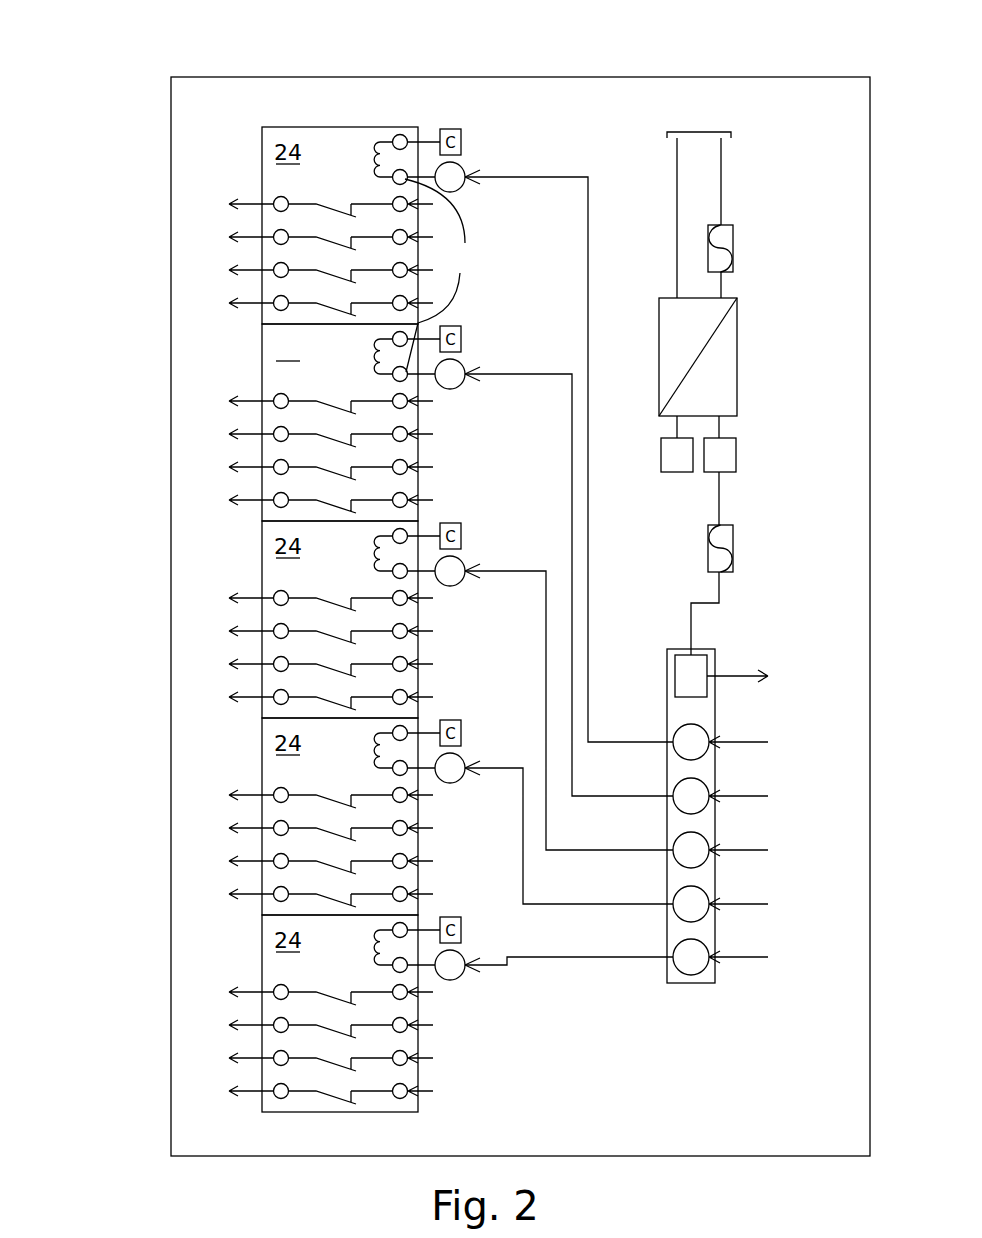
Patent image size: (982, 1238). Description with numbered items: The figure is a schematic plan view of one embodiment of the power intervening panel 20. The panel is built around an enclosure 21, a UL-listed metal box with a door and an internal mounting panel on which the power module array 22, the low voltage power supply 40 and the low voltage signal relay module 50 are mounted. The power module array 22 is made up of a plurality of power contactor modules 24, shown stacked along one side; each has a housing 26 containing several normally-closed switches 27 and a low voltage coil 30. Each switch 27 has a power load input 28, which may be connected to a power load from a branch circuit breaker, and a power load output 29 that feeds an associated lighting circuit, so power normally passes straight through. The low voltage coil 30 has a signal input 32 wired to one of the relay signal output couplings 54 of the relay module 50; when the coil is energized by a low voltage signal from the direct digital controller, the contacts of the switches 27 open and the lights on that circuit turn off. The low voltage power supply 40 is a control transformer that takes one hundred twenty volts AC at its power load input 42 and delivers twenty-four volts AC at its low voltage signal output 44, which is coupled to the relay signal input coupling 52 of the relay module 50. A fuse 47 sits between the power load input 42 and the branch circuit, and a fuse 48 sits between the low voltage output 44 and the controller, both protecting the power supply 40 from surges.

The power intervening panel 20 is at (127, 147).
The enclosure 21 is at (407, 77).
The power module array 22 is at (263, 127).
The power contactor module 24 is at (307, 600).
The housing 26 is at (262, 357).
The normally-closed switches 27 is at (373, 500).
The power load input 28 is at (433, 500).
The power load output 29 is at (228, 500).
The low voltage coil 30 is at (373, 157).
The signal input 32 is at (440, 275).
The low voltage power supply 40 is at (738, 355).
The power load input 42 is at (677, 295).
The low voltage signal output 44 is at (710, 475).
The fuse 47 is at (735, 245).
The fuse 48 is at (733, 543).
The low voltage signal relay module 50 is at (707, 650).
The relay signal input coupling 52 is at (675, 662).
The relay signal output couplings 54 is at (675, 897).